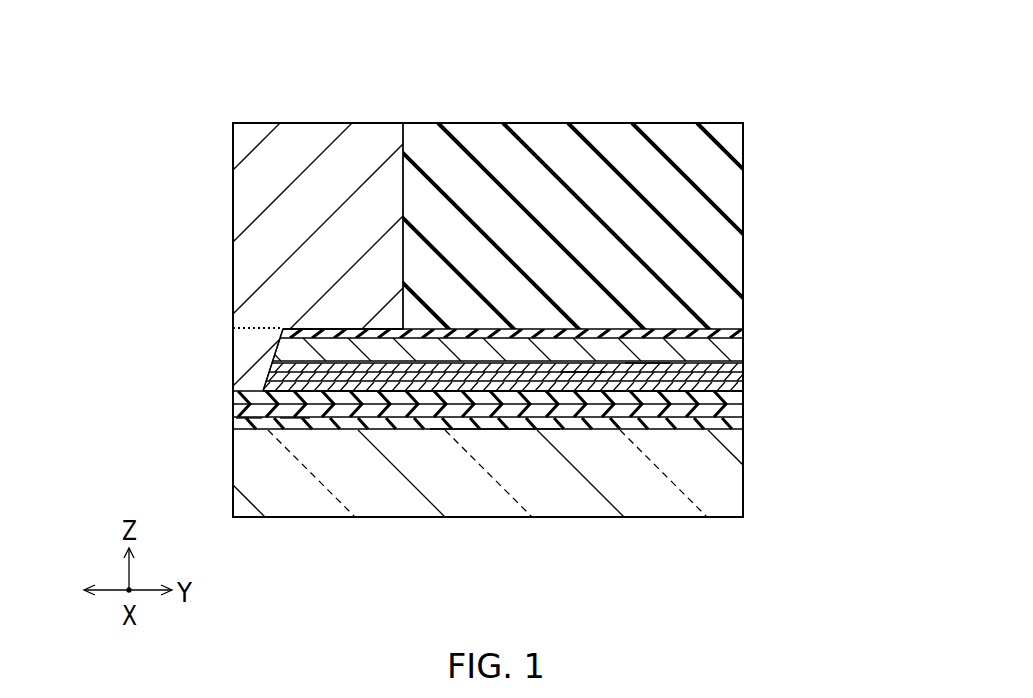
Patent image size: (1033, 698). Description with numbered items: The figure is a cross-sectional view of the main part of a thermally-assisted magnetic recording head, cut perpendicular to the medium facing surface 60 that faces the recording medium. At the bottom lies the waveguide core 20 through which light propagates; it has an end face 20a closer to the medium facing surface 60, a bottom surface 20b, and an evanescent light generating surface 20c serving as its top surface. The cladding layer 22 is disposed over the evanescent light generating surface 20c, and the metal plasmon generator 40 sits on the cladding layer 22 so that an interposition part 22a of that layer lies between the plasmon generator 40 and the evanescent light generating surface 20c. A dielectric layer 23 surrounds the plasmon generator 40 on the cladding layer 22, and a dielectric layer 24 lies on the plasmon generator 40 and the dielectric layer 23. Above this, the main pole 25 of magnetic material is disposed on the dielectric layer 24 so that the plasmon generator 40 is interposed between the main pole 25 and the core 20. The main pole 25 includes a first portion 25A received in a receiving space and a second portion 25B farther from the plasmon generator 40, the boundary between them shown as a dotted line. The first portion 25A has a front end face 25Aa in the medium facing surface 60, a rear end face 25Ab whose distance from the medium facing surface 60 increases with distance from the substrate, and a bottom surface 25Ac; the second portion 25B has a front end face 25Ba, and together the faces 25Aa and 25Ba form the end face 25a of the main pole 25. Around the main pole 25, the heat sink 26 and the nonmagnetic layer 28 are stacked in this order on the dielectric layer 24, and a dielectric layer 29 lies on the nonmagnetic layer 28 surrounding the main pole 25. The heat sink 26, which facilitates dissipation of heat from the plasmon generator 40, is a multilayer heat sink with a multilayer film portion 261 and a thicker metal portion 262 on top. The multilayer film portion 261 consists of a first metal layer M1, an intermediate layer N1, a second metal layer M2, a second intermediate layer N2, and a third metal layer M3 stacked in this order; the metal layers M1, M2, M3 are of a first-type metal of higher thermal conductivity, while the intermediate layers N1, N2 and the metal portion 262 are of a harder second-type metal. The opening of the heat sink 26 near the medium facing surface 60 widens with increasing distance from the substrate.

The core 20 is at (743, 492).
The end face 20a is at (233, 472).
The bottom surface 20b is at (480, 517).
The evanescent light generating surface 20c is at (488, 429).
The cladding layer 22 is at (743, 427).
The interposition part 22a is at (293, 425).
The dielectric layer 23 is at (743, 413).
The dielectric layer 24 is at (743, 399).
The main pole 25 is at (365, 55).
The first portion 25A is at (255, 340).
The second portion 25B is at (333, 133).
The end face 25a is at (132, 232).
The front end face 25Aa is at (233, 337).
The rear end face 25Ab is at (386, 330).
The bottom surface 25Ac is at (250, 425).
The front end face 25Ba is at (233, 288).
The heat sink 26 is at (488, 452).
The multilayer film portion 261 is at (458, 452).
The metal portion 262 is at (743, 352).
The nonmagnetic layer 28 is at (740, 337).
The dielectric layer 29 is at (740, 245).
The plasmon generator 40 is at (233, 412).
The medium facing surface 60 is at (230, 150).
The first metal layer M1 is at (273, 386).
The second metal layer M2 is at (276, 376).
The third metal layer M3 is at (279, 366).
The intermediate layer N1 is at (582, 378).
The second intermediate layer N2 is at (647, 370).